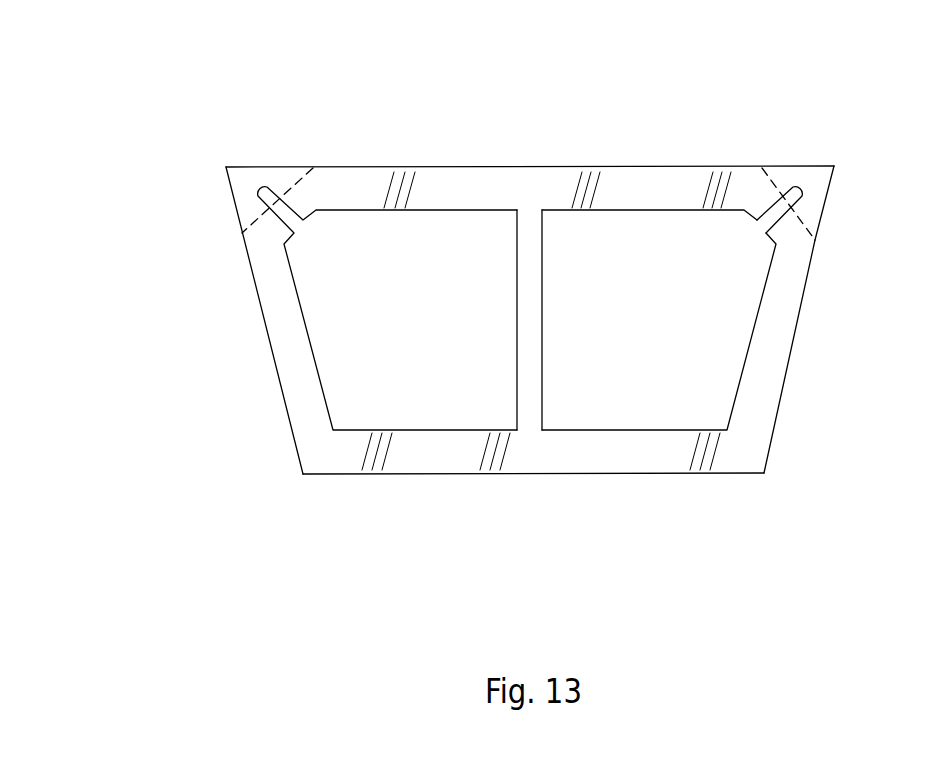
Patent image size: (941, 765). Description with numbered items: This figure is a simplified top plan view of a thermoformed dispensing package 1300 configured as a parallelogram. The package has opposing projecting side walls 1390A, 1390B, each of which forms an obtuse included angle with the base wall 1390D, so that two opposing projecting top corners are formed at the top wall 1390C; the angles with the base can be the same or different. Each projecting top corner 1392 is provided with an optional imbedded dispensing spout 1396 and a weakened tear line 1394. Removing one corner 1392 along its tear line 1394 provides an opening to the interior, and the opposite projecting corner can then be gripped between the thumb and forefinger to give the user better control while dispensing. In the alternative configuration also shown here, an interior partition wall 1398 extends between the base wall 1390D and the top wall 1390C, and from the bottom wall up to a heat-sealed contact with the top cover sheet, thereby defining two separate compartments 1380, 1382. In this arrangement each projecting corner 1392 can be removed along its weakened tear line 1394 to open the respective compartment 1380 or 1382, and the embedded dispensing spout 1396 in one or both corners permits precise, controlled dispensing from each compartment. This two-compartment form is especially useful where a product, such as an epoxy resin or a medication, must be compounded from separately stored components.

The frame assembly 1300 is at (115, 55).
The compartment 1380 is at (702, 393).
The compartment 1382 is at (340, 353).
The projecting side wall 1390A is at (768, 333).
The projecting side wall 1390B is at (268, 273).
The top wall 1390C is at (455, 191).
The base wall 1390D is at (427, 457).
The projecting top corner 1392 is at (813, 178).
The weakened tear line 1394 is at (766, 184).
The imbedded dispensing spout 1396 is at (780, 216).
The interior partition wall 1398 is at (530, 400).